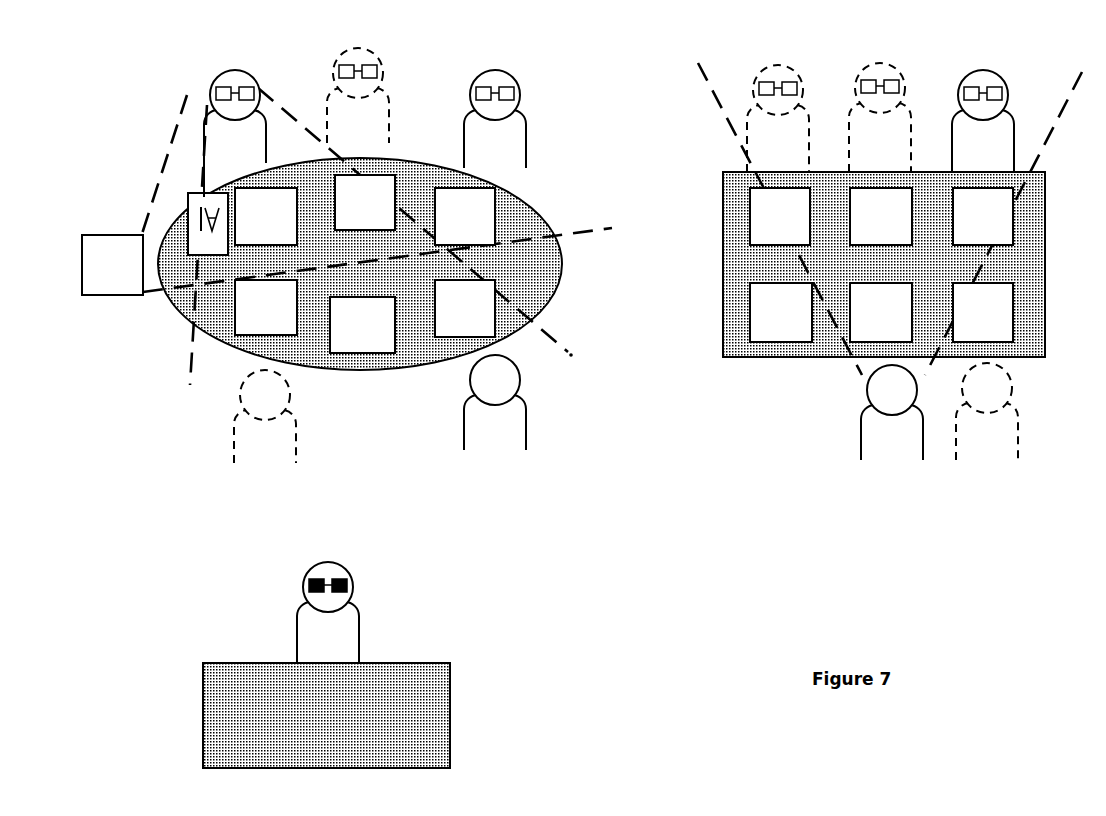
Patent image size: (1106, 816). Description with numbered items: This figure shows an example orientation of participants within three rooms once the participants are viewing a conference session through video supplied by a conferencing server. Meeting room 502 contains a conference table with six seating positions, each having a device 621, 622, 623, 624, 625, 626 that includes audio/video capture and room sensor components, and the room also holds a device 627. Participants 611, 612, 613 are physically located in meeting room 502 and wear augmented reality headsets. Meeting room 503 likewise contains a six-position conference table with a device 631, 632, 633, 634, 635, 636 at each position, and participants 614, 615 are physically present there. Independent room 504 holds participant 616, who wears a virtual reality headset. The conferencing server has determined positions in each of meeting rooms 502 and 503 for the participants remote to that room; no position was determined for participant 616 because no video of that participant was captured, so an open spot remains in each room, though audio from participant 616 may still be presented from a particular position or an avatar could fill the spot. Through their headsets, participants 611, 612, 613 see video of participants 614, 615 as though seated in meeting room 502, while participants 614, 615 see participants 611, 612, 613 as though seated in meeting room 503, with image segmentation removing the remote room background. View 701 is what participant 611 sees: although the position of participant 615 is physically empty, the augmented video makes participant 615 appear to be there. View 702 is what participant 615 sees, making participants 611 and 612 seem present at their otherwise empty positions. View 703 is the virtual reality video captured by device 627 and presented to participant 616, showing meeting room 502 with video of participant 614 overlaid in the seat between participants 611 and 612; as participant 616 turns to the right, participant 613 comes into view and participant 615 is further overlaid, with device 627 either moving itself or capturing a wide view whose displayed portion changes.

The meeting room 502 is at (146, 80).
The meeting room 503 is at (686, 80).
The independent room 504 is at (188, 568).
The participant 611 is at (506, 131).
The participant 612 is at (687, 117).
The participant 613 is at (741, 407).
The participant 614 is at (670, 110).
The participant 615 is at (578, 414).
The participant 616 is at (328, 612).
The device 621 is at (266, 216).
The device 622 is at (365, 202).
The device 623 is at (465, 216).
The device 624 is at (465, 308).
The device 625 is at (362, 325).
The device 626 is at (266, 307).
The device 627 is at (112, 265).
The device 631 is at (780, 216).
The device 632 is at (881, 216).
The device 633 is at (983, 216).
The device 634 is at (983, 312).
The device 635 is at (881, 312).
The device 636 is at (781, 312).
The view 701 is at (548, 344).
The view 702 is at (1078, 80).
The view 703 is at (168, 155).